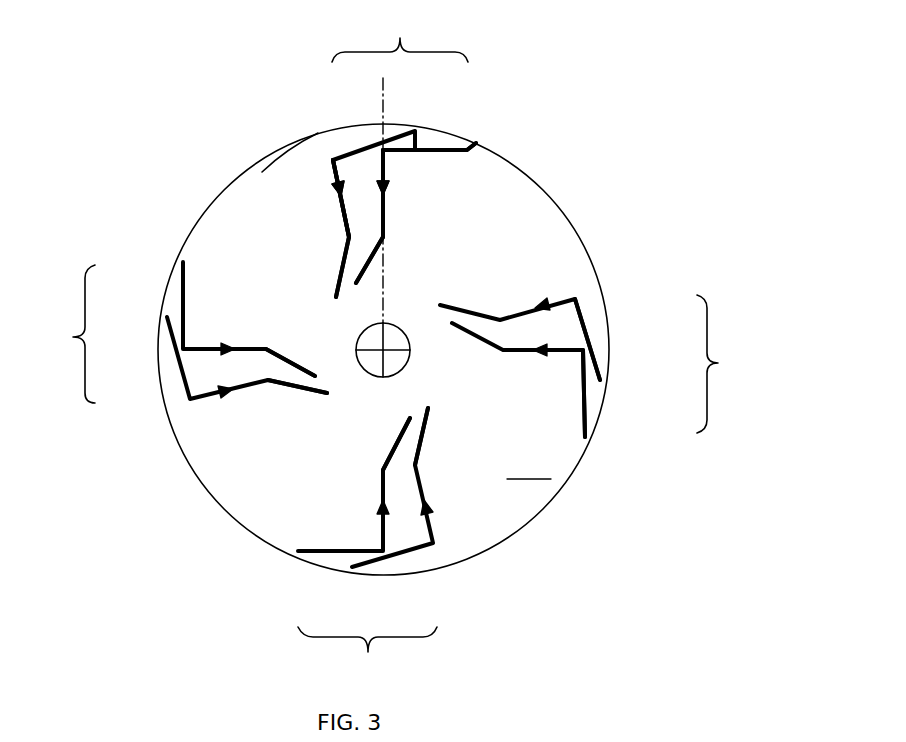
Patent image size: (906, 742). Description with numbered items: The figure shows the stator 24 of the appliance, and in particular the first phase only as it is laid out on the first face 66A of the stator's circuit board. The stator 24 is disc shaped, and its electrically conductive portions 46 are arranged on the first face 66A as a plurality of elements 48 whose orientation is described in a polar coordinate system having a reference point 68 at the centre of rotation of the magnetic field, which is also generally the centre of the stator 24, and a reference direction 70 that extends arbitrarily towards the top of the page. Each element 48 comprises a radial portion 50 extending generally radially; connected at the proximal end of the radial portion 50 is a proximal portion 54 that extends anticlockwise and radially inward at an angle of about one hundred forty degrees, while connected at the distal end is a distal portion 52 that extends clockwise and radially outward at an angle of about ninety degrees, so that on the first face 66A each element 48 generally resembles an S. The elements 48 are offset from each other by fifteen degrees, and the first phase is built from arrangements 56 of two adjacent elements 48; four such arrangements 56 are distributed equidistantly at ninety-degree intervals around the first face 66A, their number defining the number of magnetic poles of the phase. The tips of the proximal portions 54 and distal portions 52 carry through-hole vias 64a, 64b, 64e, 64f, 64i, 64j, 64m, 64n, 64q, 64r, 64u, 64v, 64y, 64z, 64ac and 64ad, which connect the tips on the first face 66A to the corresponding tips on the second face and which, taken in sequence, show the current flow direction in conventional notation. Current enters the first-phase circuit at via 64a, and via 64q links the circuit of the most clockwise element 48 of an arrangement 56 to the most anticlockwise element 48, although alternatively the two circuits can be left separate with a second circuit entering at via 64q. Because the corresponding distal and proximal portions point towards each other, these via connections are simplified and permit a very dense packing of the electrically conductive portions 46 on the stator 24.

The stator 24 is at (537, 517).
The electrically conductive portions 46 is at (284, 147).
The element 48 is at (322, 191).
The radial portion 50 is at (346, 217).
The distal portion 52 is at (345, 154).
The proximal portion 54 is at (342, 268).
The arrangement 56 is at (399, 346).
The via 64a is at (476, 145).
The via 64b is at (365, 281).
The via 64e is at (183, 262).
The via 64f is at (315, 376).
The via 64i is at (298, 551).
The via 64j is at (410, 418).
The via 64m is at (585, 437).
The via 64n is at (452, 323).
The via 64q is at (415, 131).
The via 64r is at (336, 297).
The via 64u is at (167, 317).
The via 64v is at (327, 393).
The via 64y is at (352, 567).
The via 64z is at (430, 408).
The via 64ac is at (605, 380).
The via 64ad is at (440, 305).
The first face 66A is at (529, 467).
The reference point 68 is at (380, 352).
The reference direction 70 is at (380, 88).